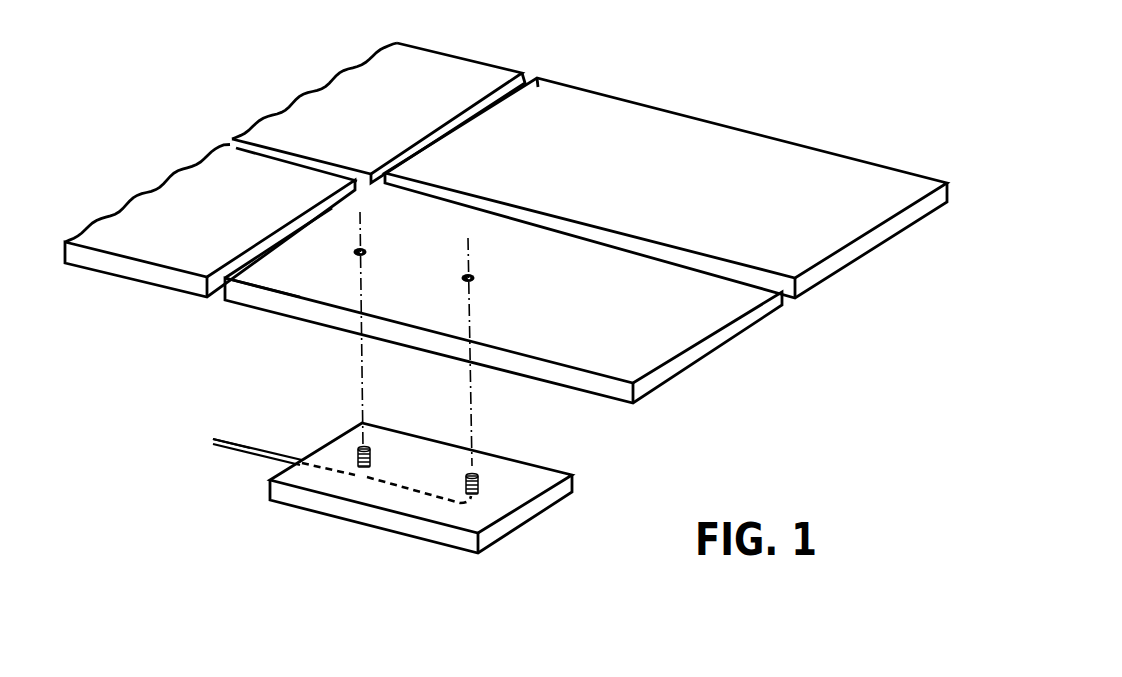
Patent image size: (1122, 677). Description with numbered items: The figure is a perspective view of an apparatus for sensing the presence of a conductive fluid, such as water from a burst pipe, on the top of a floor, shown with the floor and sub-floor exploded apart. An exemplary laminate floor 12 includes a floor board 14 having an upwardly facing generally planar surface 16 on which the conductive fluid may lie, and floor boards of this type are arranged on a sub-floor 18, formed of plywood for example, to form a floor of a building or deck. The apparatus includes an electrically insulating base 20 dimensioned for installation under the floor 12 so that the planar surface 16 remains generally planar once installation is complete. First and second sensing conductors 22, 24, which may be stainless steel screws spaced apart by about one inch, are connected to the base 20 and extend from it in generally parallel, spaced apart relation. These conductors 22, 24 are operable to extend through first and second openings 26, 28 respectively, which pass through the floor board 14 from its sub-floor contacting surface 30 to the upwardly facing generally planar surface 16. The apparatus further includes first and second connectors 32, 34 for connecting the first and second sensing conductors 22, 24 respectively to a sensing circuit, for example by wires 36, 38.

The floor 12 is at (506, 173).
The floor board 14 is at (503, 308).
The upwardly facing generally planar surface 16 is at (672, 310).
The sub-floor 18 is at (667, 473).
The electrically insulating base 20 is at (422, 502).
The first sensing conductor 22 is at (367, 447).
The second sensing conductor 24 is at (478, 480).
The first opening 26 is at (365, 248).
The second opening 28 is at (474, 276).
The sub-floor contacting surface 30 is at (275, 304).
The first connector 32 is at (371, 472).
The second connector 34 is at (470, 497).
The wire 36 is at (272, 452).
The wire 38 is at (242, 457).